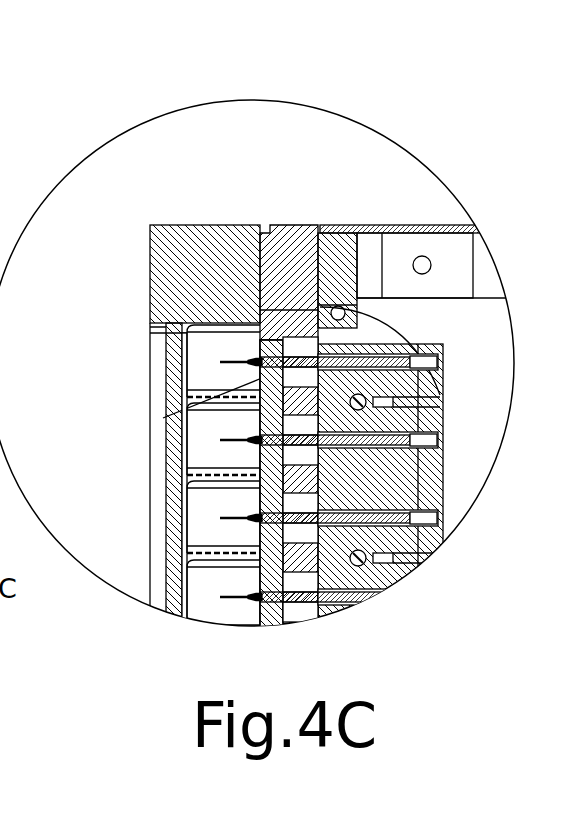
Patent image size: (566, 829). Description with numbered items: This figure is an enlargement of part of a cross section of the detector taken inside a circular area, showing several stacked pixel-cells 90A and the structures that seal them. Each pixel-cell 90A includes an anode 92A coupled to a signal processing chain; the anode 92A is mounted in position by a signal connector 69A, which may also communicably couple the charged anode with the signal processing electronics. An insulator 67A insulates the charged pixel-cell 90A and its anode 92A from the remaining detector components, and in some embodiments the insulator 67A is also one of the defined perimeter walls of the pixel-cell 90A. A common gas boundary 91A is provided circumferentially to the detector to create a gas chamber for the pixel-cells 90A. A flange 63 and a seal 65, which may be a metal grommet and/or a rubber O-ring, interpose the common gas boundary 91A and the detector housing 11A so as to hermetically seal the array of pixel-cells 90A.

The common gas boundary 91A is at (170, 243).
The insulator 67A is at (165, 418).
The flange 63 is at (307, 227).
The cover plate 11A is at (450, 226).
The pixel-cell 90A is at (243, 338).
The seal 65 is at (443, 393).
The anode 92A is at (220, 362).
The signal connector 69A is at (451, 440).